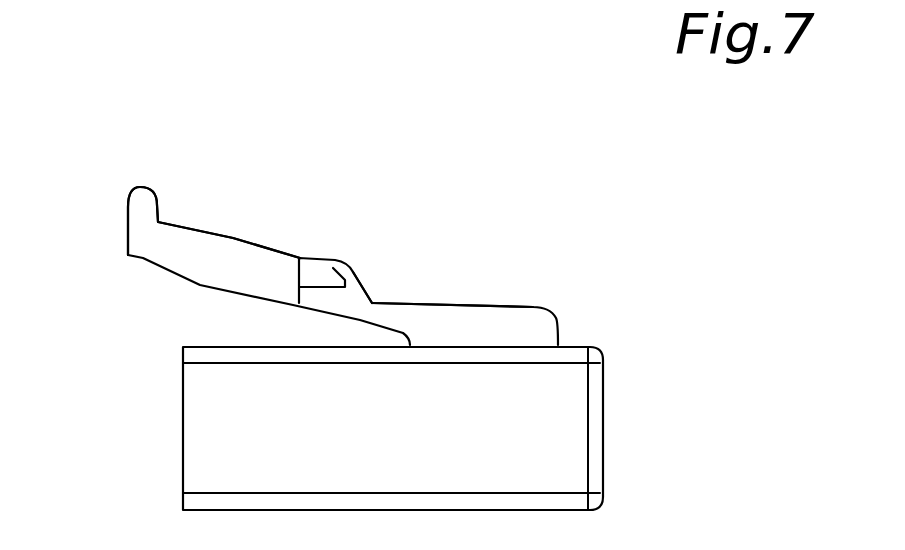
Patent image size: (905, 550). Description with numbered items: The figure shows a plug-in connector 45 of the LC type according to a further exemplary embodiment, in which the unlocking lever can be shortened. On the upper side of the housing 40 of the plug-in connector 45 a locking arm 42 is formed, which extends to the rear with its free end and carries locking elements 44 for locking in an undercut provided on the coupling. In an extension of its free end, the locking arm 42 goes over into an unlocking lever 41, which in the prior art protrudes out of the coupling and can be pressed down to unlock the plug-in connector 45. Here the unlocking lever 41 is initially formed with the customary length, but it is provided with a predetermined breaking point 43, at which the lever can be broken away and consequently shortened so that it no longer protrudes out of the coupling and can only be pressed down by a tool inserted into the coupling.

The housing 40 is at (498, 398).
The unlocking lever 41 is at (142, 228).
The locking arm 42 is at (372, 303).
The predetermined breaking point 43 is at (220, 297).
The locking elements 44 is at (330, 290).
The plug-in connector 45 is at (637, 263).